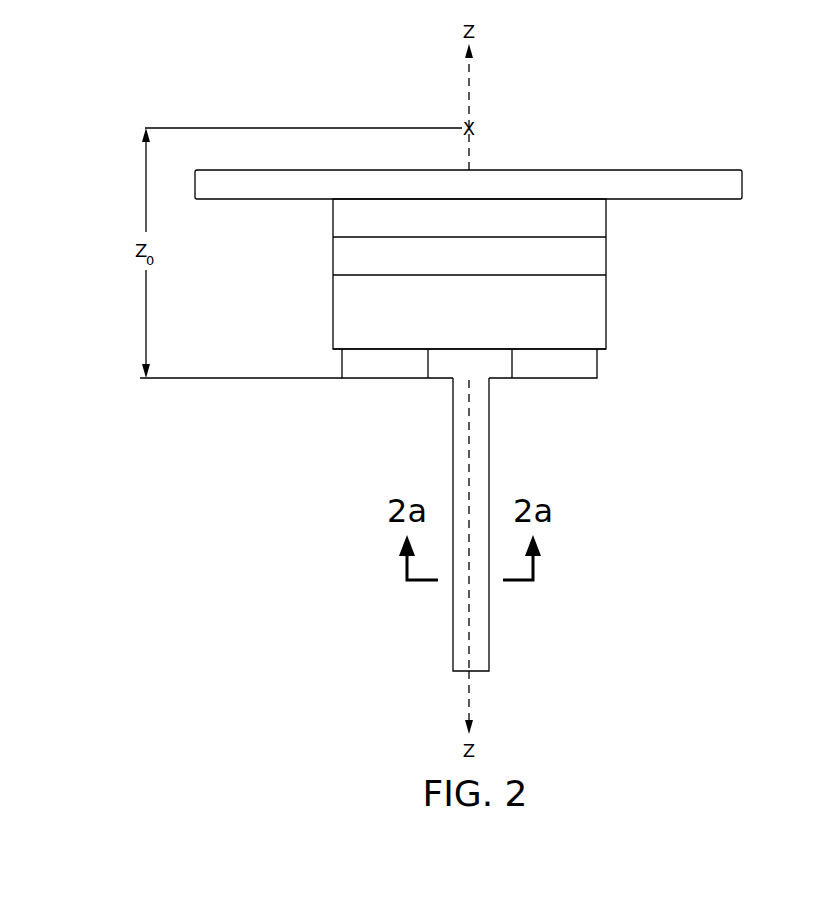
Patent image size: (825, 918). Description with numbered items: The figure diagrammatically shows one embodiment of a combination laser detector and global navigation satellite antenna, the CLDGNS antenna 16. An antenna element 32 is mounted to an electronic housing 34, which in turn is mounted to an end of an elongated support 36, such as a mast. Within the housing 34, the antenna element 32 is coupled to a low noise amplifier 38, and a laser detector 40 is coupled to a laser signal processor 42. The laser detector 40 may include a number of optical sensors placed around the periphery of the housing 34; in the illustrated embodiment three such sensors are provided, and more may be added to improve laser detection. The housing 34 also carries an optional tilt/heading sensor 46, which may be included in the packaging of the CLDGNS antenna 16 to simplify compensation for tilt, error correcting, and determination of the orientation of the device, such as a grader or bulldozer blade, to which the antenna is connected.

The CLDGNS antenna 16 is at (735, 160).
The antenna element 32 is at (573, 170).
The electronic housing 34 is at (333, 300).
The elongated support 36 is at (489, 459).
The low noise amplifier 38 is at (606, 225).
The laser detector 40 is at (385, 378).
The laser signal processor 42 is at (606, 263).
The tilt/heading sensor 46 is at (606, 316).